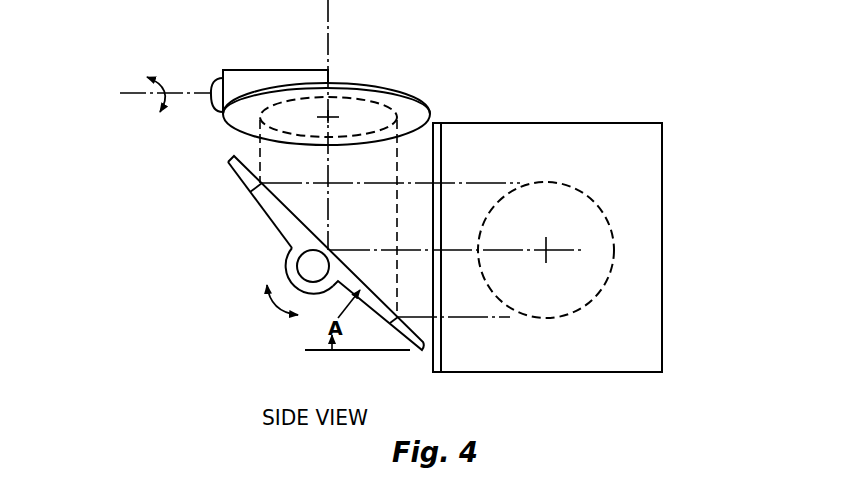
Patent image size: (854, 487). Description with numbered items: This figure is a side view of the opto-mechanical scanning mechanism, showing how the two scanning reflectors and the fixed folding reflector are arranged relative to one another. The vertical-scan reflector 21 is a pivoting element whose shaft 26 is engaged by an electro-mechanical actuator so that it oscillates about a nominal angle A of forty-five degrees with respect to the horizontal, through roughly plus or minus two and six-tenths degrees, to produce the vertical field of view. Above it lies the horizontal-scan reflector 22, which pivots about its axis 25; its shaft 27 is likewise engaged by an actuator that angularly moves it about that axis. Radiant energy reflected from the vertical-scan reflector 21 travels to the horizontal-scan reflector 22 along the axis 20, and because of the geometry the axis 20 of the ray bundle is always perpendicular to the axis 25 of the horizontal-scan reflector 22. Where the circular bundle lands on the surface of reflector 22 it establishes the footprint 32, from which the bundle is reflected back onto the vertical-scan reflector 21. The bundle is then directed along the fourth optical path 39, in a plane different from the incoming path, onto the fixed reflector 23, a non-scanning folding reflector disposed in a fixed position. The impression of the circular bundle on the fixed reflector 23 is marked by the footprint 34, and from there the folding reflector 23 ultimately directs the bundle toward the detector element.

The axis 20 is at (328, 14).
The vertical-scan reflector 21 is at (258, 206).
The horizontal-scan reflector 22 is at (405, 93).
The fixed reflector 23 is at (548, 123).
The axis 25 is at (171, 93).
The shaft 26 is at (297, 266).
The shaft 27 is at (217, 78).
The footprint 32 is at (357, 97).
The footprint 34 is at (580, 192).
The fourth optical path 39 is at (470, 251).